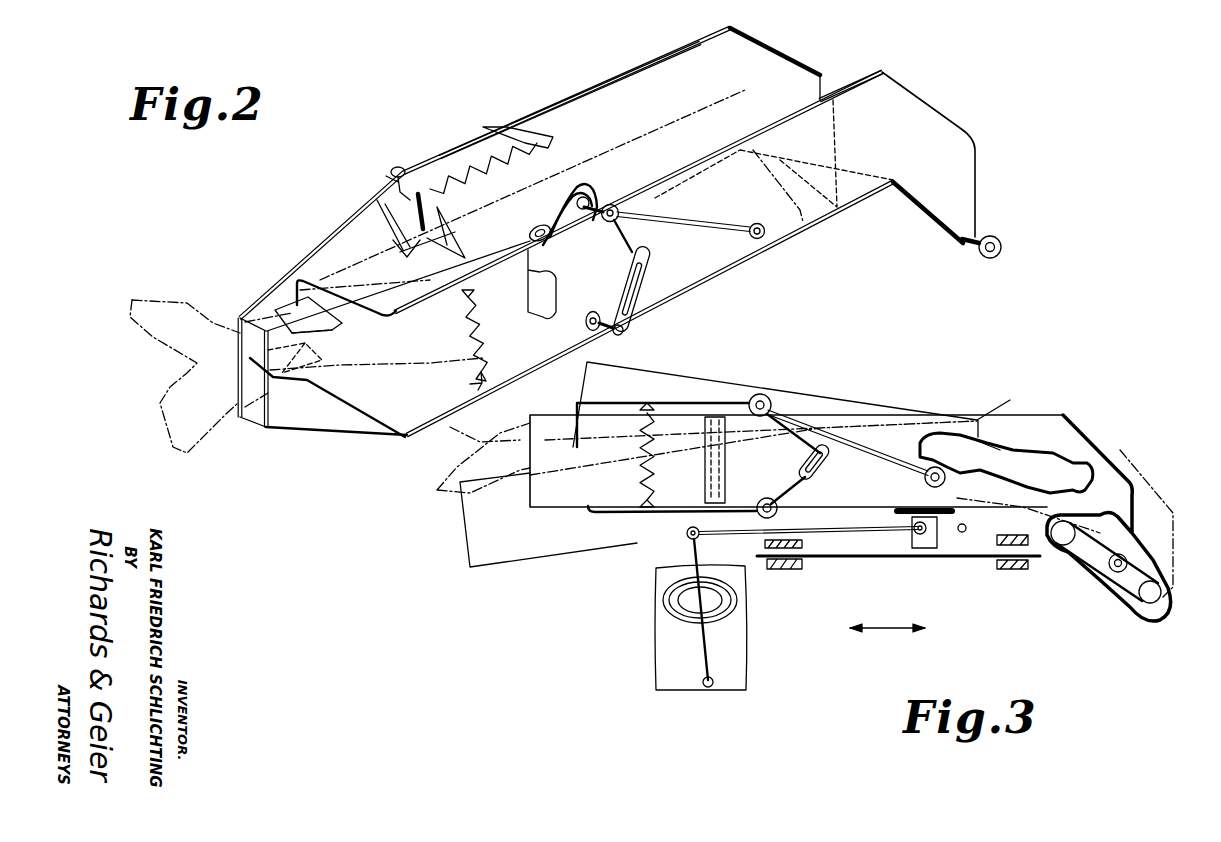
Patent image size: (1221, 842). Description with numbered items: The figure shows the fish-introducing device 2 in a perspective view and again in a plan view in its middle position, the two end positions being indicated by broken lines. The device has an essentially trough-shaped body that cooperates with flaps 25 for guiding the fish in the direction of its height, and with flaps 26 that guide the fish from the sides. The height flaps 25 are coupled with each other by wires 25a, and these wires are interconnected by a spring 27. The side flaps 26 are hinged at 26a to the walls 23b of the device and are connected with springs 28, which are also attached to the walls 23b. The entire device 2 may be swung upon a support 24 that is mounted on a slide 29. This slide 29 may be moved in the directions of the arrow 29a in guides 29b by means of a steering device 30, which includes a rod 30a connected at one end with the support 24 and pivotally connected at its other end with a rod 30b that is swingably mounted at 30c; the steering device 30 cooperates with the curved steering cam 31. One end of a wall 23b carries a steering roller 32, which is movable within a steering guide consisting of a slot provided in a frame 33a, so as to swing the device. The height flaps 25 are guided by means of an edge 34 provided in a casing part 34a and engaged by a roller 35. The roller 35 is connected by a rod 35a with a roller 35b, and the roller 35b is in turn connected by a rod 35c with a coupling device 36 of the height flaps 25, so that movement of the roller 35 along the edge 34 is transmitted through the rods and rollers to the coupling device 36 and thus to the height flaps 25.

In FIG. 2, the fish-introducing device 2 is at (652, 66).
In FIG. 3, the fish-introducing device 2 is at (1083, 416).
In FIG. 2, the walls 23b is at (596, 86).
In FIG. 3, the support 24 is at (915, 548).
In FIG. 2, the flaps 25 is at (280, 303).
In FIG. 2, the wires 25a is at (408, 314).
In FIG. 2, the flaps 26 is at (333, 243).
In FIG. 2, the hinge 26a is at (398, 166).
In FIG. 2, the spring 27 is at (465, 352).
In FIG. 2, the springs 28 is at (462, 165).
In FIG. 3, the slide 29 is at (844, 560).
In FIG. 3, the arrow 29a is at (888, 628).
In FIG. 3, the guides 29b is at (785, 570).
In FIG. 3, the steering device 30 is at (700, 645).
In FIG. 3, the rod 30a is at (745, 533).
In FIG. 3, the rod 30b is at (684, 540).
In FIG. 3, the pivot mounting 30c is at (703, 688).
In FIG. 3, the curved steering cam 31 is at (680, 608).
In FIG. 2, the steering roller 32 is at (996, 238).
In FIG. 3, the steering roller 32 is at (1128, 550).
In FIG. 3, the frame 33a is at (1128, 602).
In FIG. 3, the edge 34 is at (1013, 480).
In FIG. 3, the casing part 34a is at (1003, 450).
In FIG. 2, the roller 35 is at (764, 238).
In FIG. 3, the roller 35 is at (924, 479).
In FIG. 2, the rod 35a is at (706, 226).
In FIG. 3, the rod 35a is at (875, 418).
In FIG. 2, the roller 35b is at (611, 204).
In FIG. 3, the roller 35b is at (762, 393).
In FIG. 2, the rod 35c is at (628, 252).
In FIG. 3, the rod 35c is at (798, 453).
In FIG. 2, the coupling device 36 is at (643, 296).
In FIG. 3, the coupling device 36 is at (798, 470).